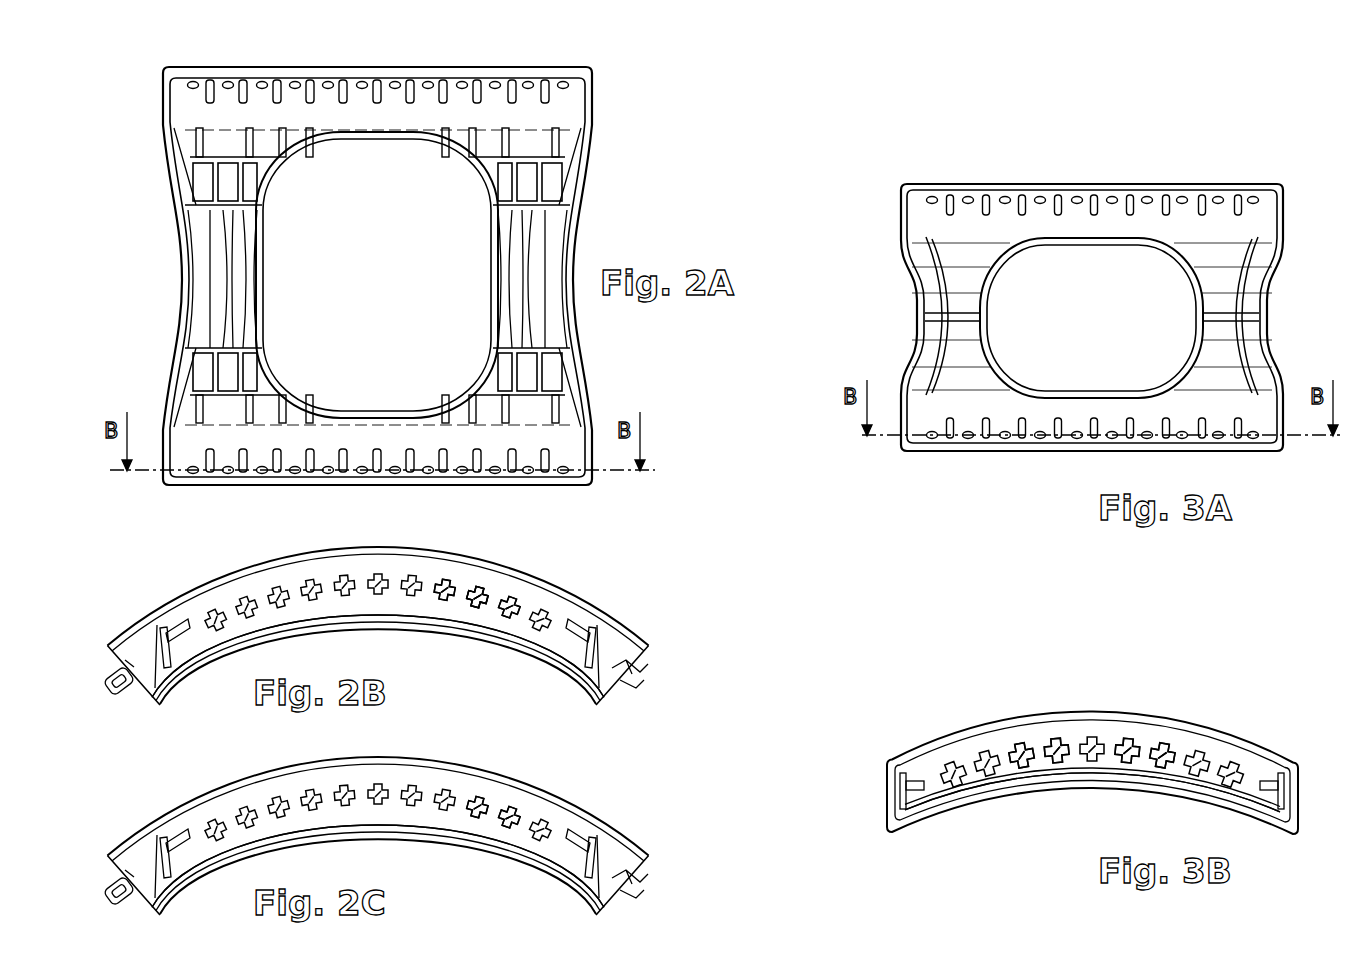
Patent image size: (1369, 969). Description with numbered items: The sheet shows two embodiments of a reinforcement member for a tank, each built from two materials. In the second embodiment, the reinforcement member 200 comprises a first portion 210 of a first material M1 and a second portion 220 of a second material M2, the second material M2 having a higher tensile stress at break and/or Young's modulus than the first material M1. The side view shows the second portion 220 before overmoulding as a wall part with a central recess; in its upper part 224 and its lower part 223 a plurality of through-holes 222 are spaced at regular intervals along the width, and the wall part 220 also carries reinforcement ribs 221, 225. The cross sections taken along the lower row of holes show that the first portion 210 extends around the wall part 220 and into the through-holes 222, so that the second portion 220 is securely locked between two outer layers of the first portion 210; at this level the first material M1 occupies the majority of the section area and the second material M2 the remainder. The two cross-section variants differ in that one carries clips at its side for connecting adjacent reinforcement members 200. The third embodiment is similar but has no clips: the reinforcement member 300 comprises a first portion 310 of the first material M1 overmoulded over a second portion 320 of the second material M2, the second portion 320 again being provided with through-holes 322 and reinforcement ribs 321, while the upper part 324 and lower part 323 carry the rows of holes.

In FIG. 2A, the second portion 220 is at (148, 275).
In FIG. 2A, the upper part 224 is at (615, 96).
In FIG. 2A, the reinforcement rib 225 is at (548, 385).
In FIG. 2A, the lower part 223 is at (152, 486).
In FIG. 2A, the through-holes 222 is at (362, 478).
In FIG. 2B, the through-holes 222 is at (462, 600).
In FIG. 2A, the reinforcement rib 221 is at (446, 475).
In FIG. 2B, the reinforcement rib 221 is at (482, 608).
In FIG. 2B, the reinforcement member 200 is at (654, 612).
In FIG. 2C, the reinforcement member 200 is at (654, 822).
In FIG. 2B, the first portion 210 is at (562, 645).
In FIG. 2C, the first portion 210 is at (527, 845).
In FIG. 2B, the first material M1 is at (493, 590).
In FIG. 2C, the first material M1 is at (563, 827).
In FIG. 3B, the first material M1 is at (1178, 745).
In FIG. 2B, the second material M2 is at (520, 595).
In FIG. 2C, the second material M2 is at (512, 810).
In FIG. 3B, the second material M2 is at (1125, 762).
In FIG. 3A, the second portion 320 is at (895, 300).
In FIG. 3A, the upper edge portion with holes 324 is at (1137, 162).
In FIG. 3A, the lower edge portion 323 is at (951, 436).
In FIG. 3A, the reinforcement ribs 321 is at (1020, 440).
In FIG. 3B, the reinforcement ribs 321 is at (1020, 742).
In FIG. 3A, the through-holes 322 is at (1072, 442).
In FIG. 3B, the through-holes 322 is at (1042, 750).
In FIG. 3B, the reinforcement member 300 is at (1295, 738).
In FIG. 3B, the first portion 310 is at (1252, 793).